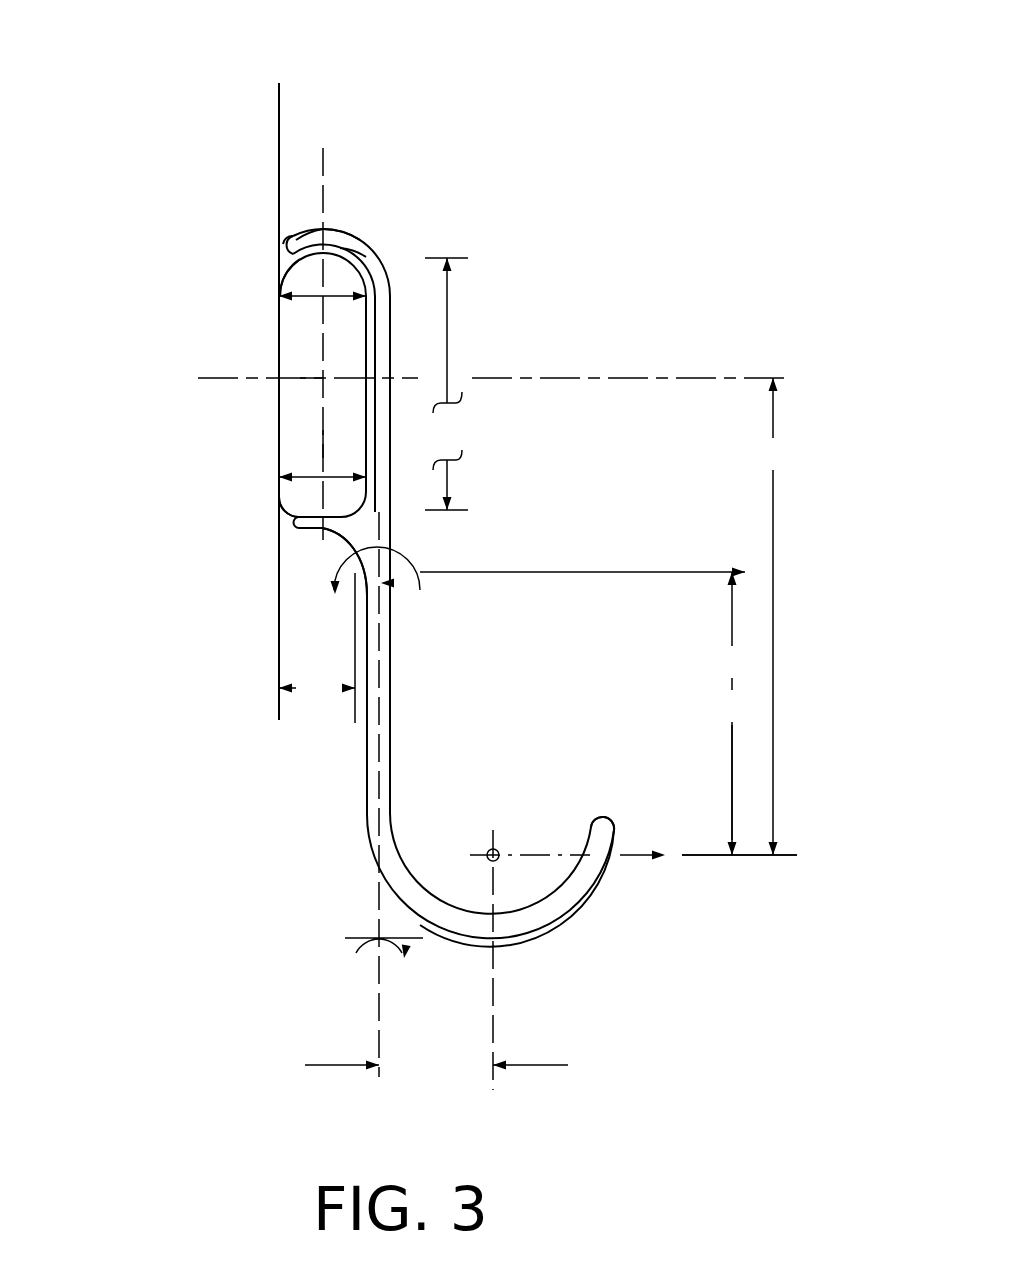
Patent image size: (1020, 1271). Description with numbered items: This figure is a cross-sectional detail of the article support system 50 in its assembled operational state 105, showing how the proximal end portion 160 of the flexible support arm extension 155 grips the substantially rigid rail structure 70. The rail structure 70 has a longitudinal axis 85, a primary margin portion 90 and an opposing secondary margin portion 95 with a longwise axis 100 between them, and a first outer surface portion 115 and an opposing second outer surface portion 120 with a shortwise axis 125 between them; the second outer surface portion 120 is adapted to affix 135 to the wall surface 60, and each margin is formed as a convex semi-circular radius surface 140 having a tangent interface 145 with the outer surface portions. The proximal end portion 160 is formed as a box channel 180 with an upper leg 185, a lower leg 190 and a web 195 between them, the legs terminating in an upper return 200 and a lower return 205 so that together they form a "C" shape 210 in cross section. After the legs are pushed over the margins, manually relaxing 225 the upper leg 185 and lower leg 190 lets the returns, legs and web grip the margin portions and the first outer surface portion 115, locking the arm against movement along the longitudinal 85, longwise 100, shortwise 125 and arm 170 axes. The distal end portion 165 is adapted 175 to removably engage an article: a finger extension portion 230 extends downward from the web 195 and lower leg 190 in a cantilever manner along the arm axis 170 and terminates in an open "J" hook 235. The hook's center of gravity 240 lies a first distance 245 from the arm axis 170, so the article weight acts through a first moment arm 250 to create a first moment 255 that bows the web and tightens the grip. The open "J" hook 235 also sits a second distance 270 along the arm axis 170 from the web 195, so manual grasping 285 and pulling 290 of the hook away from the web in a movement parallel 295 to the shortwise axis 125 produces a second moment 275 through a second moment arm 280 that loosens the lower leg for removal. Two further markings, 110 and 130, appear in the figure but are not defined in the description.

The article support system 50 is at (592, 60).
The wall surface 60 is at (279, 102).
The rail structure 70 is at (278, 470).
The longitudinal axis 85 is at (313, 377).
The primary margin portion 90 is at (278, 289).
The secondary margin portion 95 is at (290, 495).
The longwise axis 100 is at (323, 158).
The assembled operational state 105 is at (600, 122).
The horizontal reference line 110 is at (494, 376).
The first outer surface portion 115 is at (337, 448).
The second outer surface portion 120 is at (278, 335).
The shortwise axis 125 is at (408, 378).
The offset distance 130 is at (317, 648).
The affixing 135 is at (278, 278).
The convex semi-circular radius surface 140 is at (278, 288).
The tangent interface 145 is at (278, 293).
The flexible support arm extension 155 is at (392, 640).
The proximal end portion 160 is at (366, 245).
The distal end portion 165 is at (370, 868).
The arm axis 170 is at (378, 1005).
The adaptation to removably engage the article 175 is at (598, 887).
The box channel 180 is at (392, 547).
The upper leg 185 is at (340, 230).
The lower leg 190 is at (345, 538).
The web 195 is at (392, 457).
The upper return 200 is at (300, 230).
The lower return 205 is at (298, 525).
The C shape cross section 210 is at (158, 130).
The manually relaxing the upper and lower legs 225 is at (550, 250).
The finger extension portion 230 is at (392, 745).
The open J hook 235 is at (588, 848).
The center of gravity of the open J hook 240 is at (494, 850).
The first distance 245 is at (420, 570).
The first moment arm 250 is at (436, 1065).
The first moment 255 is at (352, 942).
The second distance 270 is at (739, 713).
The second moment 275 is at (333, 583).
The second moment arm 280 is at (731, 768).
The manual grasping of the open J hook 285 is at (508, 937).
The manual pulling of the open J hook 290 is at (633, 858).
The movement parallel to the shortwise axis 295 is at (776, 616).